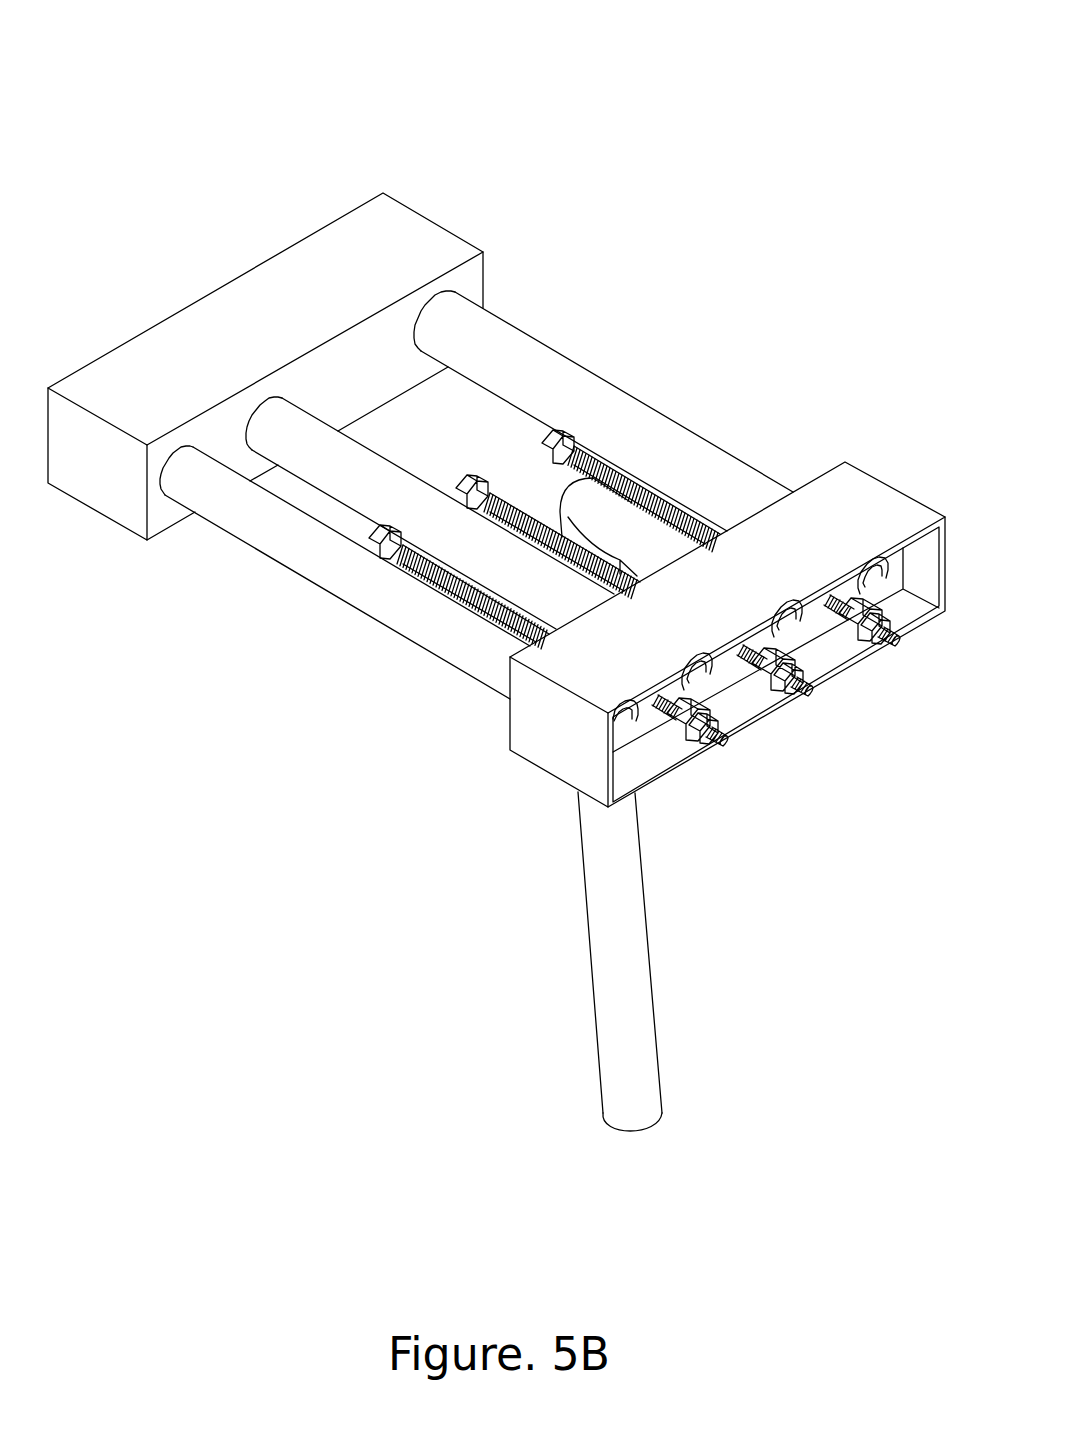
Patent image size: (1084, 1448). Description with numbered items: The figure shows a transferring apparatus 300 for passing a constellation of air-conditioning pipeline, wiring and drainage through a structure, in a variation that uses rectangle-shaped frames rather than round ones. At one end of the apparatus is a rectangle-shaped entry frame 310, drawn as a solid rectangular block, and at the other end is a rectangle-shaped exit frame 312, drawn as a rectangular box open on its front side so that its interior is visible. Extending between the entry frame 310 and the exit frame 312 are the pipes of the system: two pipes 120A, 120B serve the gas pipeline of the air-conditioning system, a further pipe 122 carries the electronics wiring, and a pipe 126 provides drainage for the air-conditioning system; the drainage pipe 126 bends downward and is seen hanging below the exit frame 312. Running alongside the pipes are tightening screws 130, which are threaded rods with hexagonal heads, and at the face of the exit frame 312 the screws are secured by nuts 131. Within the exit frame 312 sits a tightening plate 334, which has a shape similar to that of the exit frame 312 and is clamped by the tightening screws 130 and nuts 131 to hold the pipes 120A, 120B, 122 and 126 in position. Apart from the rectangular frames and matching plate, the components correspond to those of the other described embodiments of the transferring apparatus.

The transferring apparatus 300 is at (782, 107).
The entry frame 310 is at (208, 295).
The exit frame 312 is at (878, 493).
The pipe 120A is at (345, 577).
The pipe 120B is at (582, 383).
The pipe 122 is at (352, 493).
The pipe 126 is at (607, 957).
The tightening screws 130 is at (468, 613).
The nuts 131 is at (766, 688).
The tightening plate 334 is at (818, 625).